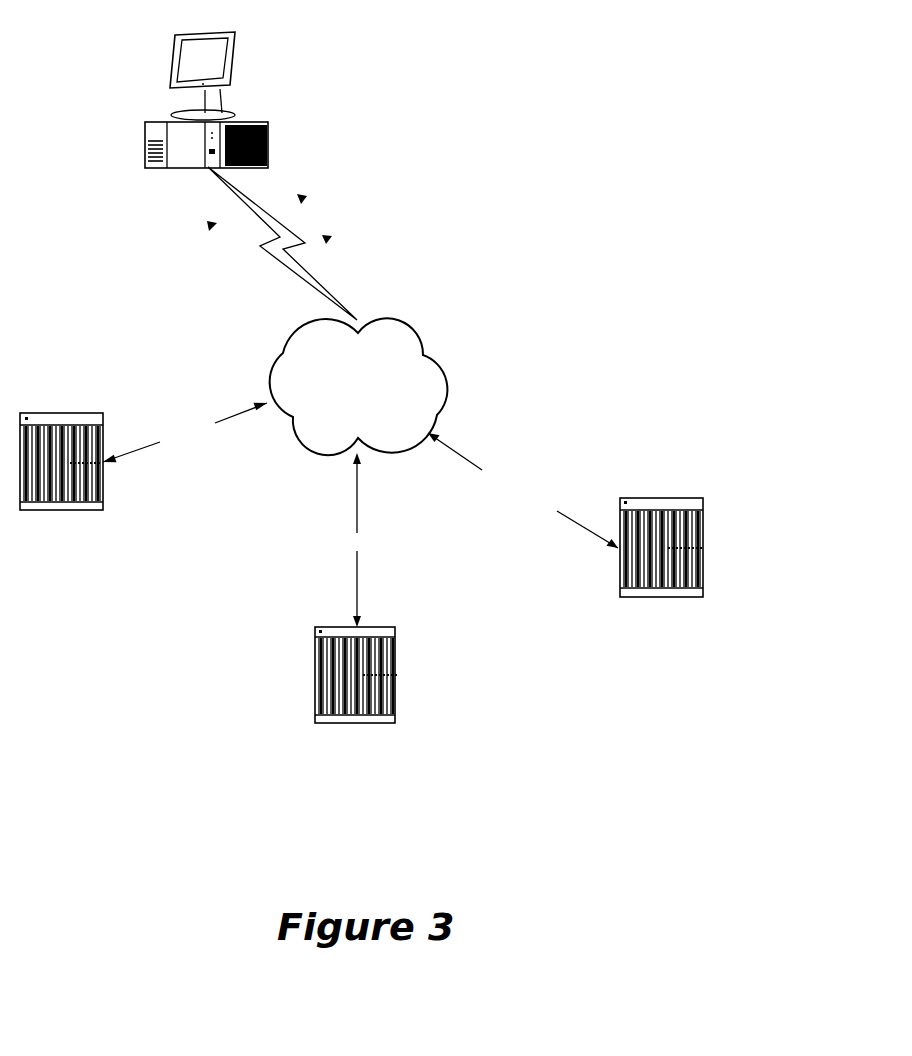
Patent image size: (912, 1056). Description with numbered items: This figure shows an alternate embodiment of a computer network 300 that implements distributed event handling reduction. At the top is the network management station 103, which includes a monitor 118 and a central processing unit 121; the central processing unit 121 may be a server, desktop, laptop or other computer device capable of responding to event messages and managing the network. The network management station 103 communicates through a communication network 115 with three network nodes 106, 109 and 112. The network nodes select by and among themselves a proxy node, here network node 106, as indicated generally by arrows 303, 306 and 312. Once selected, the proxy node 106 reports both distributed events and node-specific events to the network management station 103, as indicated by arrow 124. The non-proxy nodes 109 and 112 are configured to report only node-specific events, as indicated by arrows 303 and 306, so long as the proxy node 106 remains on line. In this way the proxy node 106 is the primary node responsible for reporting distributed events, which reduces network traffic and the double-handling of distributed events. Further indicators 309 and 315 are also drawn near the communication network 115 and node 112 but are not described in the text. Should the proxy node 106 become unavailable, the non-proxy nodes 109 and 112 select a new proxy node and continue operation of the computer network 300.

The computer network 300 is at (584, 44).
The network management station 103 is at (284, 78).
The monitor 118 is at (175, 67).
The central processing unit 121 is at (145, 145).
The arrow 124 is at (202, 363).
The communication network 115 is at (325, 450).
The network node 106 is at (63, 510).
The network node 109 is at (363, 723).
The network node 112 is at (647, 597).
The arrow 303 is at (247, 415).
The arrow 306 is at (357, 597).
The proxy selection message to node 3 309 is at (482, 470).
The arrow 312 is at (427, 558).
The node-specific events 315 is at (612, 414).